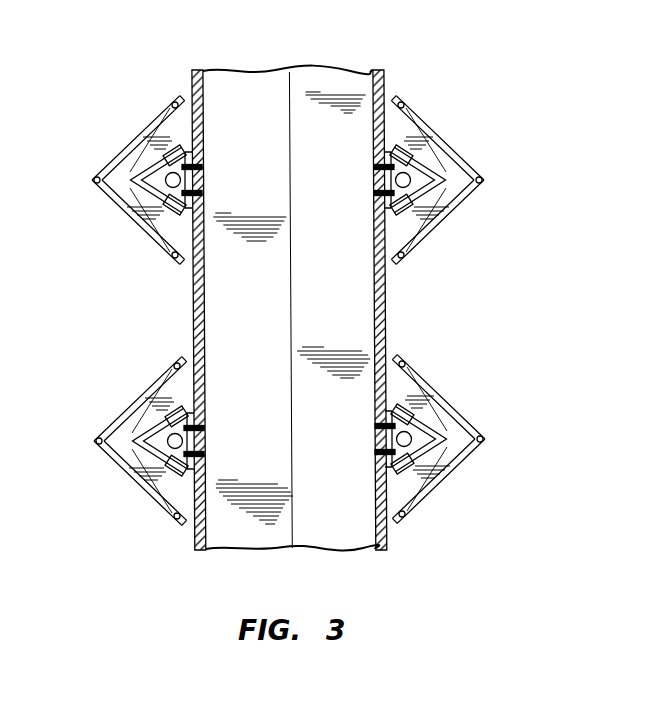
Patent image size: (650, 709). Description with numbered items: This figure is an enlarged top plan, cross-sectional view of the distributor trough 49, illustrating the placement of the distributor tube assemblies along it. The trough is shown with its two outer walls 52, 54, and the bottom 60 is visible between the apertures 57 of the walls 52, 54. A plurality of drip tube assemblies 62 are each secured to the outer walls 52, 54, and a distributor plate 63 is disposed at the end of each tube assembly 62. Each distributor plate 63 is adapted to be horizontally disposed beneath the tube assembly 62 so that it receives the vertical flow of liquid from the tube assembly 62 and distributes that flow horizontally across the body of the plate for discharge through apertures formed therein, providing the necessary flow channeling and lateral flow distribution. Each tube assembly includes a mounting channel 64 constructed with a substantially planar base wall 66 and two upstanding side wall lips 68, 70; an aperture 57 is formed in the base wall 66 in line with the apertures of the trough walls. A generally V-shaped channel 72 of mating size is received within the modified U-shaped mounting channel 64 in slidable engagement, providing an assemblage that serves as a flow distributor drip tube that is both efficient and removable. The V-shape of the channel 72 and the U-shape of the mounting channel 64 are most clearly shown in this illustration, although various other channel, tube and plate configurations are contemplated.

The distributor trough 49 is at (300, 58).
The outer wall 52 is at (205, 322).
The outer wall 54 is at (373, 318).
The bottom 60 is at (266, 285).
The tube assembly 62 is at (277, 292).
The distributor plate 63 is at (102, 164).
The mounting channel 64 is at (190, 147).
The base wall 66 is at (194, 165).
The side wall lip 68 is at (168, 137).
The side wall lip 70 is at (158, 247).
The V-shaped channel 72 is at (123, 208).
The aperture 57 is at (205, 187).